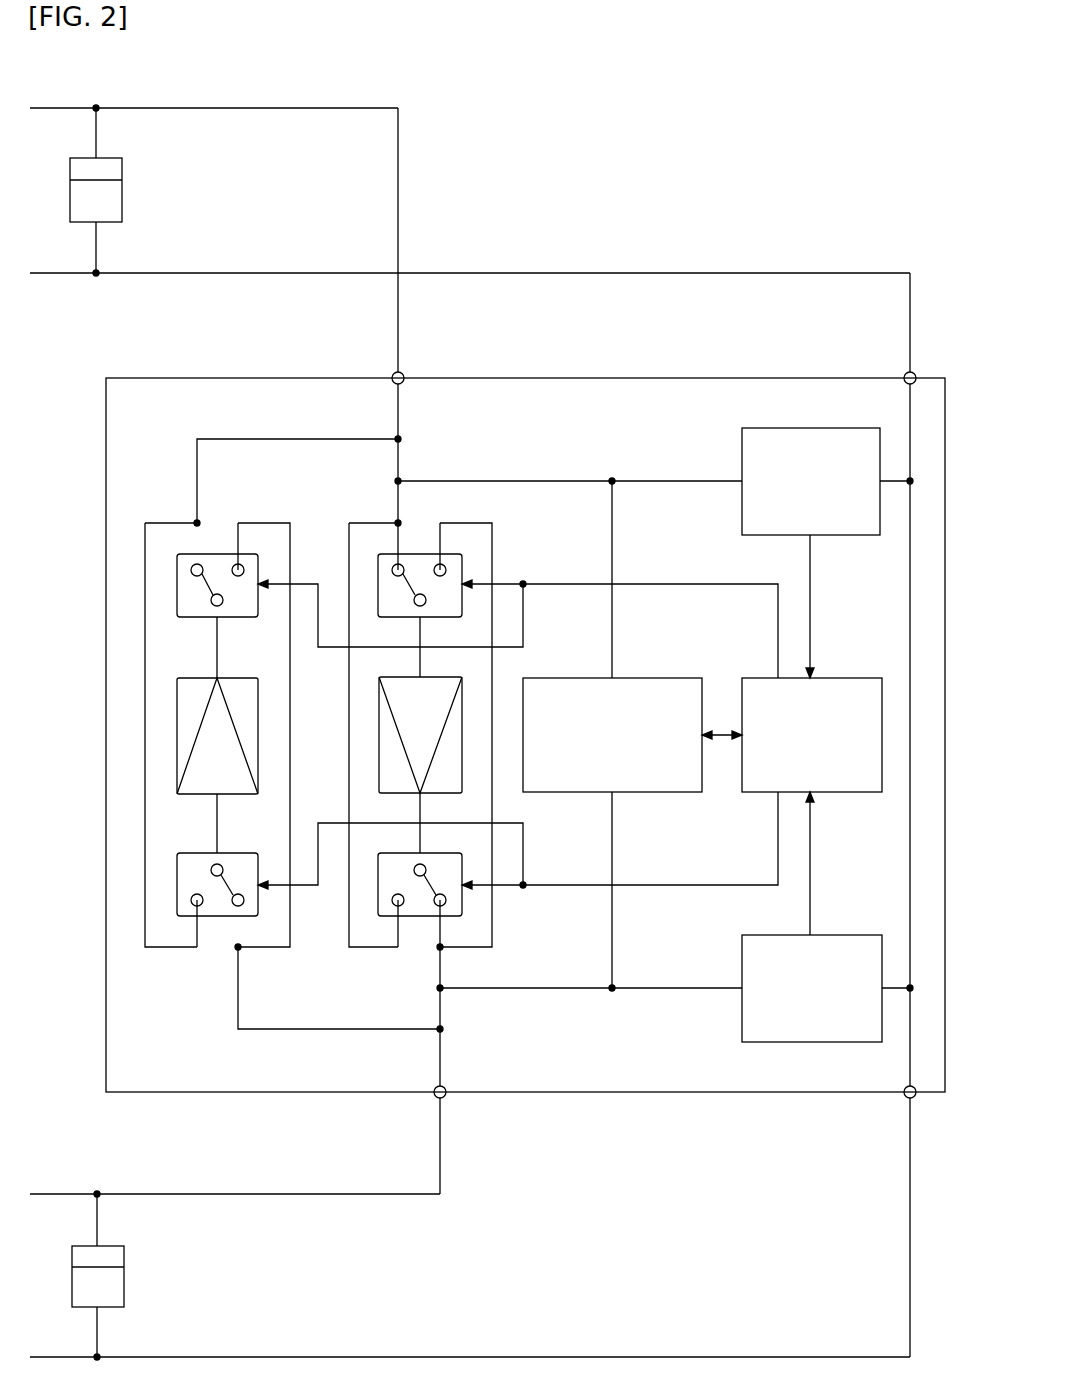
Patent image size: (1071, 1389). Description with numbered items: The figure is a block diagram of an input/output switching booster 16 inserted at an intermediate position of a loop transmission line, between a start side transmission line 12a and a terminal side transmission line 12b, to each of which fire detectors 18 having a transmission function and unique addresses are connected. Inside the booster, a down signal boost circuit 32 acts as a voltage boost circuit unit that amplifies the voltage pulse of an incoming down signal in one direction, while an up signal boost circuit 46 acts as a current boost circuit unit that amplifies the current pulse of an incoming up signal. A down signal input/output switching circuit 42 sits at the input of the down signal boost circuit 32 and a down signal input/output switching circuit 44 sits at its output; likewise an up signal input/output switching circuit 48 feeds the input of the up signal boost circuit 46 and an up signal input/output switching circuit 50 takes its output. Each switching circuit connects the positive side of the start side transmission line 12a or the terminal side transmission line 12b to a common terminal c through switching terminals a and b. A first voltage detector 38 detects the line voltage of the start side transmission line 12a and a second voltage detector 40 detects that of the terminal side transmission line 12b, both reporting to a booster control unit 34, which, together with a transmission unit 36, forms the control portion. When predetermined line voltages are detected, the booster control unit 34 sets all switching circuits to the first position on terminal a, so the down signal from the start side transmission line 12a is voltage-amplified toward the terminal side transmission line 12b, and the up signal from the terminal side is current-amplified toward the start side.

The start side transmission line 12a is at (288, 107).
The terminal side transmission line 12b is at (290, 1200).
The input/output switching booster 16 is at (623, 372).
The fire detector 18 is at (123, 196).
The down signal boost circuit 32 is at (407, 727).
The booster control unit 34 is at (800, 777).
The transmission unit 36 is at (600, 769).
The first voltage detector 38 is at (799, 523).
The second voltage detector 40 is at (800, 1030).
The down signal input/output switching circuit 42 is at (417, 550).
The down signal input/output switching circuit 44 is at (422, 918).
The up signal boost circuit 46 is at (204, 778).
The up signal input/output switching circuit 48 is at (220, 918).
The up signal input/output switching circuit 50 is at (216, 550).